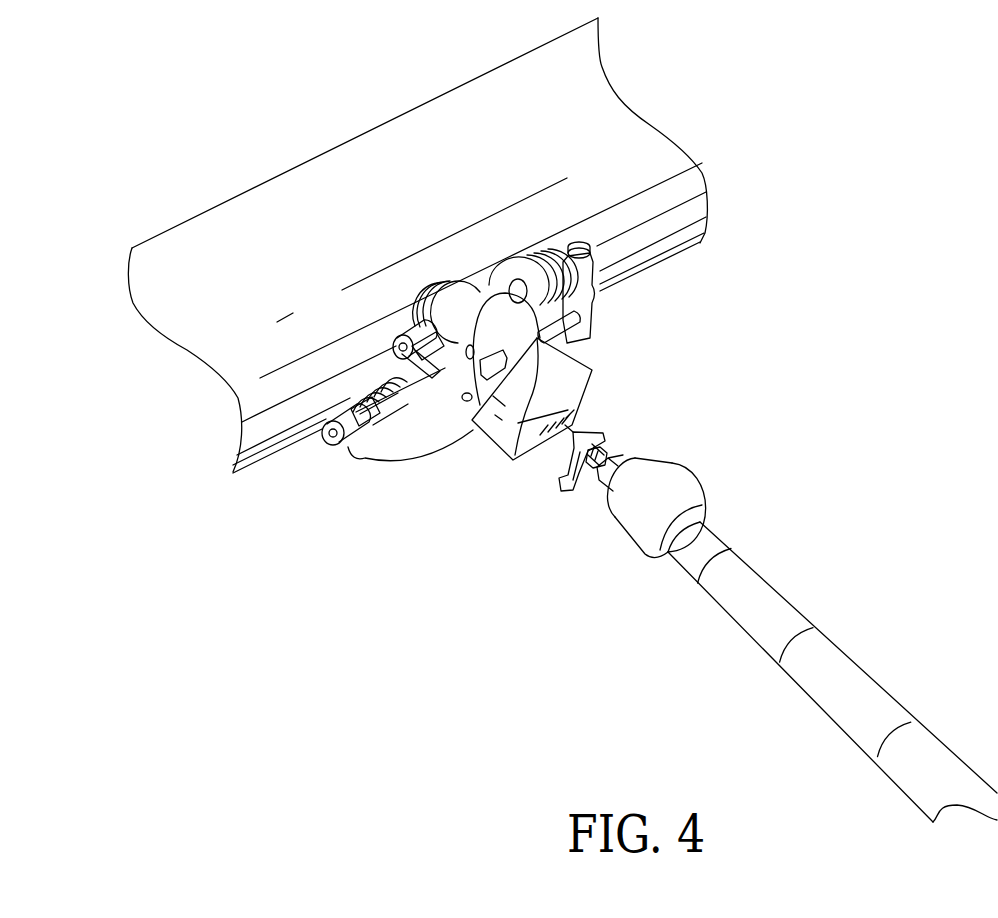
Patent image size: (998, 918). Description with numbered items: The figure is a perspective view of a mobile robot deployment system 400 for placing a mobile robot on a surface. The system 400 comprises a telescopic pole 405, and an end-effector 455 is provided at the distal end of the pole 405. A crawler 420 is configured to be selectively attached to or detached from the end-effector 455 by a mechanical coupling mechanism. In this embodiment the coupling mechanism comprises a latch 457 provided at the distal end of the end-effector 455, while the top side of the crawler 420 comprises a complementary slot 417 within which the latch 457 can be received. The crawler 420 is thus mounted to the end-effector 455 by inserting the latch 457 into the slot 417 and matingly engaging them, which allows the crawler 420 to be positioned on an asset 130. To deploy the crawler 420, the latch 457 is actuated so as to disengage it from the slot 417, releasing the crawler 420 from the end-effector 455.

The mobile robot deployment system 400 is at (934, 212).
The asset 130 is at (423, 230).
The crawler 420 is at (368, 457).
The slot 417 is at (573, 423).
The latch 457 is at (562, 488).
The end-effector 455 is at (701, 470).
The telescopic pole 405 is at (868, 670).